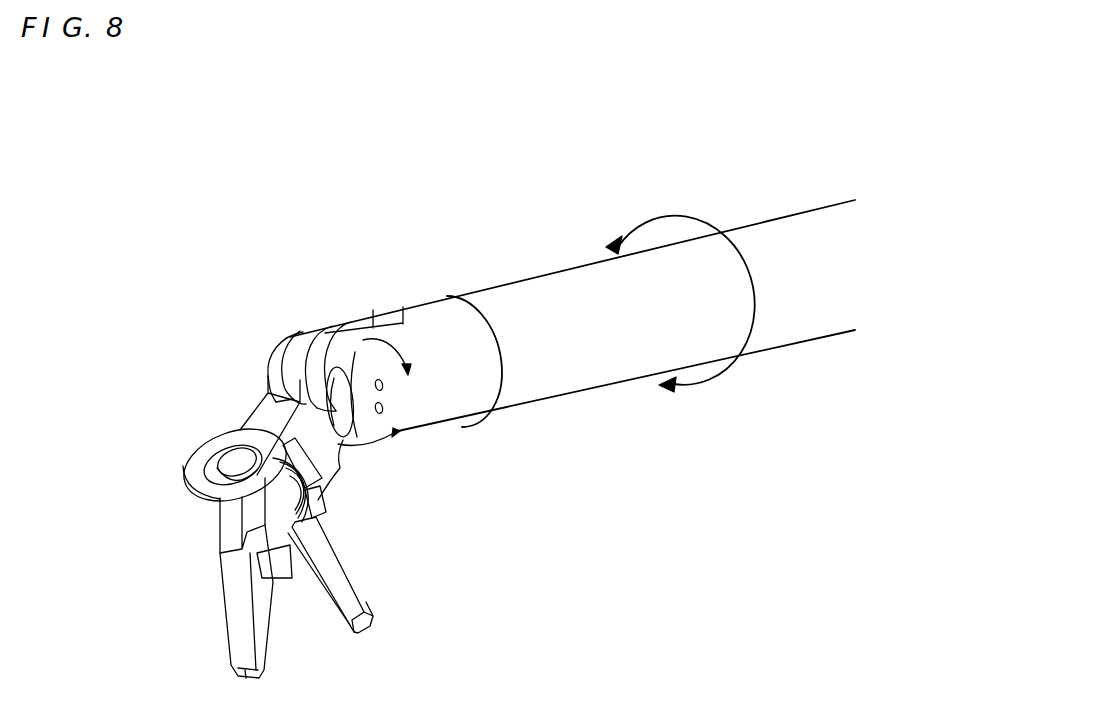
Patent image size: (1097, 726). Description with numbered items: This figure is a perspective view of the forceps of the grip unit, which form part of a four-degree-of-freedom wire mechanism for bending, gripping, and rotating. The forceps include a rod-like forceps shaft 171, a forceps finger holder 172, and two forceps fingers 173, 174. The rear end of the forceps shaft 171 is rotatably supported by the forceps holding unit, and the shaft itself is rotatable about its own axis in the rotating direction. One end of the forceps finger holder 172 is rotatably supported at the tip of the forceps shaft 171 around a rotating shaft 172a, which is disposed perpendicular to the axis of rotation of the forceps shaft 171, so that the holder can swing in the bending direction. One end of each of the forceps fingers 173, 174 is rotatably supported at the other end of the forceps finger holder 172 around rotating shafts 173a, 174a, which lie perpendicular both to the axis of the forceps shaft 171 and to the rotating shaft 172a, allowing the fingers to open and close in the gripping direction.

The forceps shaft 171 is at (521, 300).
The forceps finger holder 172 is at (265, 415).
The rotating shaft 172a is at (345, 390).
The forceps finger 173 is at (326, 558).
The rotating shaft 173a is at (320, 517).
The forceps finger 174 is at (230, 572).
The rotating shaft 174a is at (230, 463).